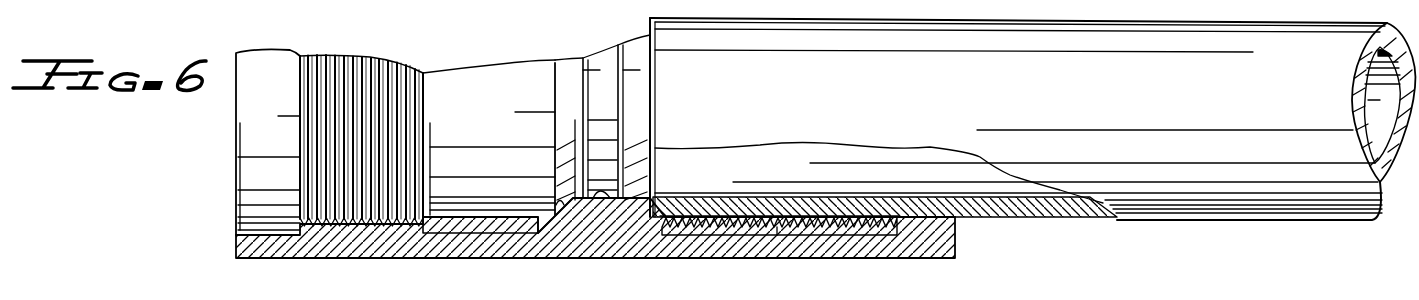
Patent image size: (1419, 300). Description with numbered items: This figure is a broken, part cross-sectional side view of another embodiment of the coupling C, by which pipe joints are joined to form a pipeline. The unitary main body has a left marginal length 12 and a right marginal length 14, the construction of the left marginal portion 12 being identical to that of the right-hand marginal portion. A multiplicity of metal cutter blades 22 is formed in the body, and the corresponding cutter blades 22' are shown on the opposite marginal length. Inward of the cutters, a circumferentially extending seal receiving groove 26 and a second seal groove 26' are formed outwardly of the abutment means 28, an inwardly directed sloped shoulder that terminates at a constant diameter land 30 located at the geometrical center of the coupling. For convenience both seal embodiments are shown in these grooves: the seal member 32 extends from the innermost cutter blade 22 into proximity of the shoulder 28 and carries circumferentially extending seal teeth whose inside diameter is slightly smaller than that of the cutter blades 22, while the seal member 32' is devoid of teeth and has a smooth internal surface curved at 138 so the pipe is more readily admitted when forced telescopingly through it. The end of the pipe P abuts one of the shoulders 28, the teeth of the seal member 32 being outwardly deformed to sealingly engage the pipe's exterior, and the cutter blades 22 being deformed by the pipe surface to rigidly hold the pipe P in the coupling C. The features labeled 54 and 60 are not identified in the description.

The marginal length 12 is at (412, 299).
The marginal length 14 is at (1120, 299).
The cutter blades 22 is at (885, 192).
The nut 22' is at (329, 142).
The seal receiving groove 26 is at (779, 253).
The seal groove 26' is at (570, 244).
The abutment means 28 is at (566, 208).
The constant diameter land 30 is at (612, 192).
The seal member 32 is at (780, 185).
The seal member 32' is at (518, 139).
The bore 54 is at (754, 293).
The step 60 is at (505, 296).
The curved internal surface 138 is at (428, 217).
The coupling C is at (292, 265).
The pipe P is at (1055, 220).